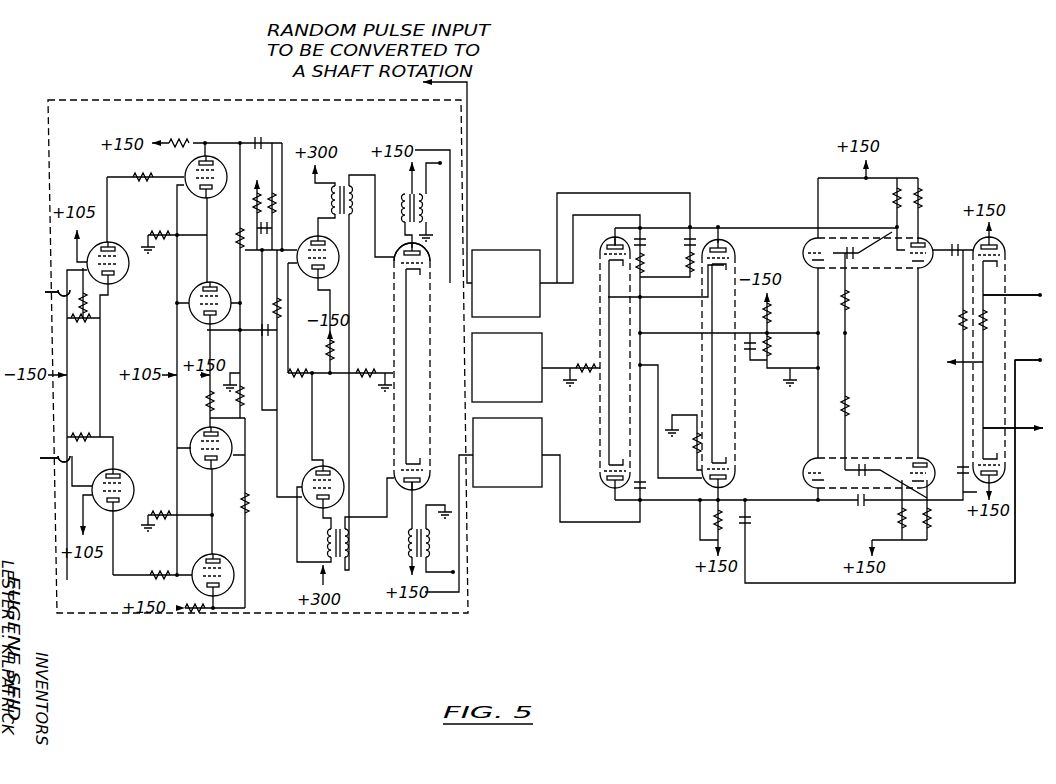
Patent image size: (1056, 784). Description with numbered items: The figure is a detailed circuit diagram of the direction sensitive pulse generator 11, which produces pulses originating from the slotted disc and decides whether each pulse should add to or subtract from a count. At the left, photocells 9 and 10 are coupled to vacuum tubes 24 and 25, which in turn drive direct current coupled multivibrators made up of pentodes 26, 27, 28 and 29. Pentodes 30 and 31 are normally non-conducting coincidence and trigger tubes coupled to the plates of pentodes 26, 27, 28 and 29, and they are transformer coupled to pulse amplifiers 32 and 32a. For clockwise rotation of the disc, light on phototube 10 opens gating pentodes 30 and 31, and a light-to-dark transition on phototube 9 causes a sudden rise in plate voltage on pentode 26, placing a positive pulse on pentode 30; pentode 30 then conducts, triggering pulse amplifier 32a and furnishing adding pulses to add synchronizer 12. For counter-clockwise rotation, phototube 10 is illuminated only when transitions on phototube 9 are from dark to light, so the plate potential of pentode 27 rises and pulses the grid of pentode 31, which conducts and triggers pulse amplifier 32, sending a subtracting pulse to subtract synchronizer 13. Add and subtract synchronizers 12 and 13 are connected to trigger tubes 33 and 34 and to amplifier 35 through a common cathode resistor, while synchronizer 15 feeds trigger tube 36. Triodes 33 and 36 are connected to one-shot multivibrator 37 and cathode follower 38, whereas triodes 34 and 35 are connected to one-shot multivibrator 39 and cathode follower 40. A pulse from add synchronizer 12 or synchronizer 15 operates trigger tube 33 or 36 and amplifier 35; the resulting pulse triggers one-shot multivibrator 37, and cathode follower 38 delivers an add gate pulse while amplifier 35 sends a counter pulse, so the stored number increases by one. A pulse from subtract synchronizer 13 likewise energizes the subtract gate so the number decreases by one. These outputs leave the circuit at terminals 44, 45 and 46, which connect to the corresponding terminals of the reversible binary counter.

The photocell 9 is at (50, 292).
The photocell 10 is at (38, 460).
The direction sensitive pulse generator 11 is at (465, 177).
The add synchronizer 12 is at (493, 257).
The subtract synchronizer 13 is at (505, 480).
The pulse generator synchronizer 15 is at (478, 377).
The vacuum tube 24 is at (121, 273).
The vacuum tube 25 is at (125, 477).
The pentode 26 is at (209, 158).
The pentode 27 is at (212, 284).
The pentode 28 is at (216, 466).
The pentode 29 is at (215, 558).
The pentode 30 is at (313, 277).
The pentode 31 is at (319, 468).
The pulse amplifier 32 is at (395, 451).
The pulse amplifier 32a is at (396, 275).
The trigger tube 33 is at (606, 249).
The trigger tube 34 is at (606, 468).
The amplifier 35 is at (735, 469).
The trigger tube 36 is at (733, 247).
The one-shot multivibrator 37 is at (888, 264).
The cathode follower 38 is at (1000, 244).
The one-shot multivibrator 39 is at (878, 458).
The cathode follower 40 is at (1004, 470).
The terminal 44 is at (1033, 461).
The terminal 45 is at (1017, 285).
The terminal 46 is at (1017, 417).